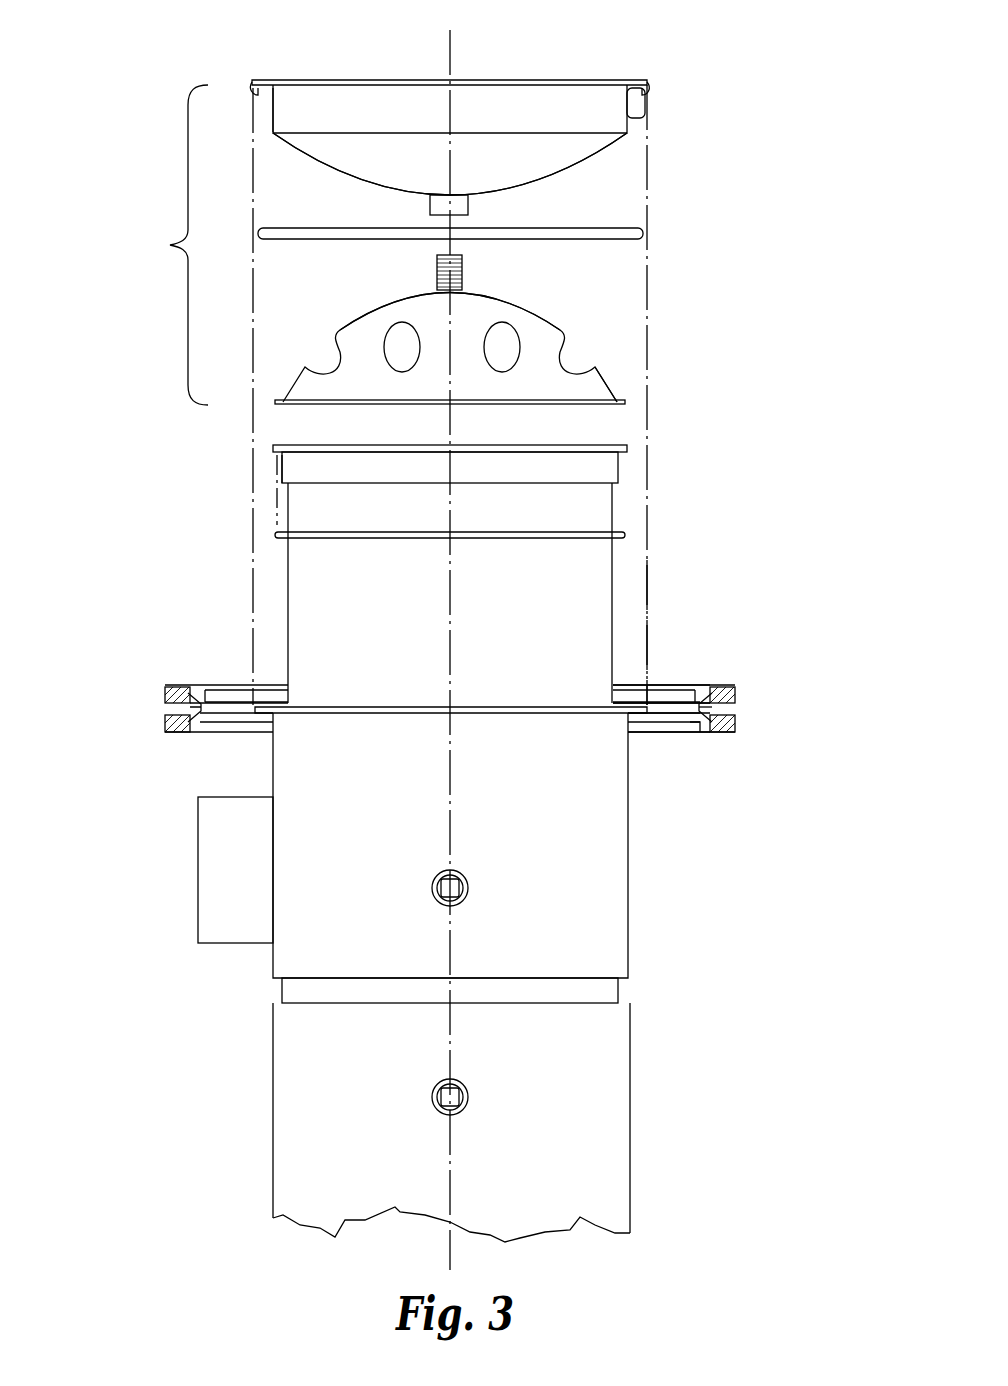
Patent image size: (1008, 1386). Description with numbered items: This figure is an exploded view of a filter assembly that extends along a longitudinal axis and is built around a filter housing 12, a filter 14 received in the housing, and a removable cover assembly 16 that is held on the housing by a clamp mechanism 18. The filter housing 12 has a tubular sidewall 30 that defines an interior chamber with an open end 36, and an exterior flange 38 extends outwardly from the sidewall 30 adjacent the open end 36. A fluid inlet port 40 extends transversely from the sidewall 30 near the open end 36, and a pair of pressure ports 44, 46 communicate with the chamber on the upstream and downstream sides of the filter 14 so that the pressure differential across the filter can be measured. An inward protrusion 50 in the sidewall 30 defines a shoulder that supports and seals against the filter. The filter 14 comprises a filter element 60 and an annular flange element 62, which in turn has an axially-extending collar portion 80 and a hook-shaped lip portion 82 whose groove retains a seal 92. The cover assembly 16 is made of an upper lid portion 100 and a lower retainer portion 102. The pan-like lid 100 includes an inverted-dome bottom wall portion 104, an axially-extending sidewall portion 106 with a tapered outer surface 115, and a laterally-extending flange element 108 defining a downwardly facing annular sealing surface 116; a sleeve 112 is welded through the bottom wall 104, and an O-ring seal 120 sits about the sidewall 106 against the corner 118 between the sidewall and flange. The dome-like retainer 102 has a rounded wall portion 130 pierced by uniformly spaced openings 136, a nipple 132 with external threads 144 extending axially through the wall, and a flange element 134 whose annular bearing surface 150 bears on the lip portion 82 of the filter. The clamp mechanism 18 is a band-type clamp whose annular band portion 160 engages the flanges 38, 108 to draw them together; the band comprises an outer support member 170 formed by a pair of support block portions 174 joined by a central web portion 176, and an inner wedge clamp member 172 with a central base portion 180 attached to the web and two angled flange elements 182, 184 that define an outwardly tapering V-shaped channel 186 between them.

The filter housing 12 is at (633, 905).
The filter 14 is at (643, 620).
The cover assembly 16 is at (175, 245).
The clamp mechanism 18 is at (150, 706).
The tubular sidewall 30 is at (631, 862).
The open end 36 is at (512, 705).
The exterior flange 38 is at (261, 694).
The fluid inlet port 40 is at (205, 943).
The pressure port 44 is at (440, 905).
The pressure port 46 is at (432, 1097).
The protrusion 50 is at (631, 990).
The filter element 60 is at (628, 566).
The flange element 62 is at (624, 465).
The collar portion 80 is at (280, 472).
The lip portion 82 is at (269, 448).
The seal 92 is at (629, 535).
The upper lid portion 100 is at (610, 167).
The lower retainer portion 102 is at (608, 326).
The bottom wall portion 104 is at (333, 178).
The sidewall portion 106 is at (270, 106).
The flange element 108 is at (265, 72).
The sleeve 112 is at (468, 206).
The outer surface 115 is at (645, 110).
The annular sealing surface 116 is at (648, 86).
The corner 118 is at (256, 80).
The seal 120 is at (651, 233).
The rounded wall portion 130 is at (551, 320).
The nipple 132 is at (469, 268).
The flange element 134 is at (623, 397).
The openings 136 is at (484, 340).
The external threads 144 is at (437, 265).
The annular bearing surface 150 is at (284, 405).
The annular band portion 160 is at (738, 668).
The outer support member 170 is at (740, 740).
The inner wedge clamp member 172 is at (698, 740).
The support block portions 174 is at (742, 697).
The central web portion 176 is at (740, 708).
The central base portion 180 is at (697, 698).
The flange element 182 is at (713, 686).
The flange element 184 is at (707, 740).
The V-shaped channel 186 is at (205, 718).